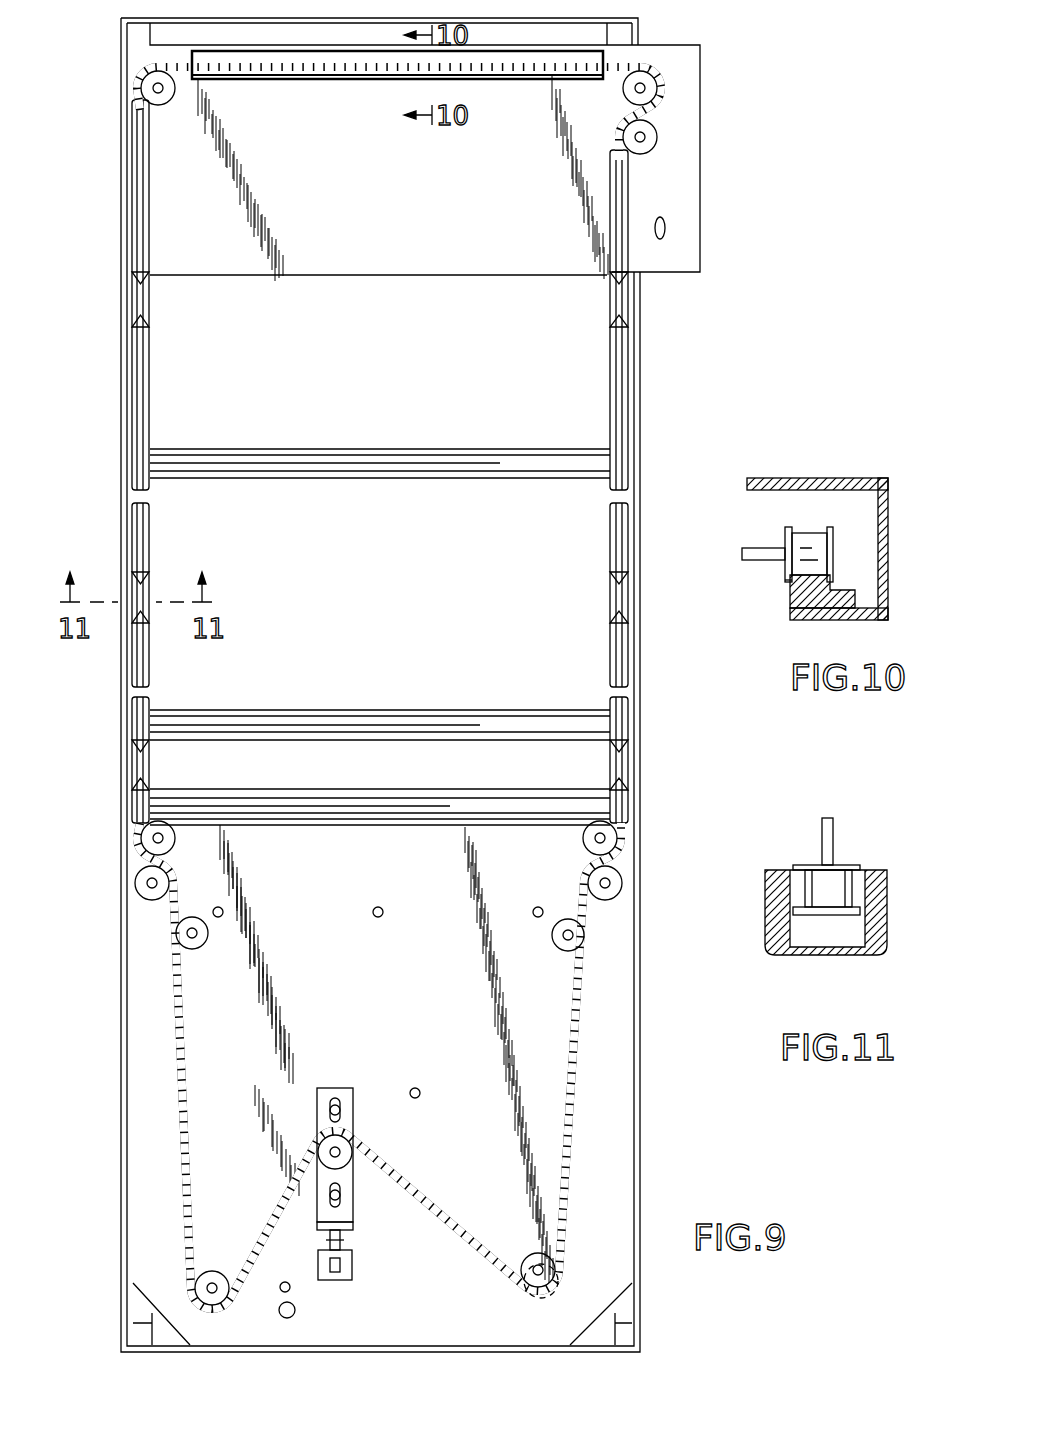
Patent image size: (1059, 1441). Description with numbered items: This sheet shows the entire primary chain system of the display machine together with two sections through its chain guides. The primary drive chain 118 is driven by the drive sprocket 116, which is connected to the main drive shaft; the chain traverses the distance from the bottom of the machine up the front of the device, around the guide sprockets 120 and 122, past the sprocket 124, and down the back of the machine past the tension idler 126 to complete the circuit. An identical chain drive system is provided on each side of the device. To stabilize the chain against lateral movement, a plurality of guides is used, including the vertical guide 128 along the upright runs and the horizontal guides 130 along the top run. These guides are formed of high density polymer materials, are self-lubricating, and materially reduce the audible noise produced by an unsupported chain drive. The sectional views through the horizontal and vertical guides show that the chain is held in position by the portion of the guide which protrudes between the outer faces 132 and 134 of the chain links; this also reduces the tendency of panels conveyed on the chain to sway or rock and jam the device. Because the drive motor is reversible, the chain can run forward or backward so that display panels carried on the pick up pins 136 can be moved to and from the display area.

In FIG. 9, the drive sprocket 116 is at (526, 1260).
In FIG. 9, the primary drive chain 118 is at (580, 1078).
In FIG. 10, the primary drive chain 118 is at (815, 540).
In FIG. 11, the primary drive chain 118 is at (840, 886).
In FIG. 9, the guide sprocket 120 is at (652, 142).
In FIG. 9, the guide sprocket 122 is at (648, 90).
In FIG. 9, the sprocket 124 is at (164, 102).
In FIG. 9, the tension idler 126 is at (347, 1162).
In FIG. 9, the vertical guide 128 is at (131, 306).
In FIG. 11, the vertical guide 128 is at (785, 895).
In FIG. 9, the horizontal guide 130 is at (322, 70).
In FIG. 10, the horizontal guide 130 is at (813, 606).
In FIG. 10, the outer face of chain link 132 is at (790, 580).
In FIG. 11, the outer face of chain link 132 is at (805, 865).
In FIG. 10, the outer face of chain link 134 is at (830, 565).
In FIG. 11, the outer face of chain link 134 is at (825, 916).
In FIG. 10, the pick up pin 136 is at (785, 555).
In FIG. 11, the pick up pin 136 is at (829, 816).